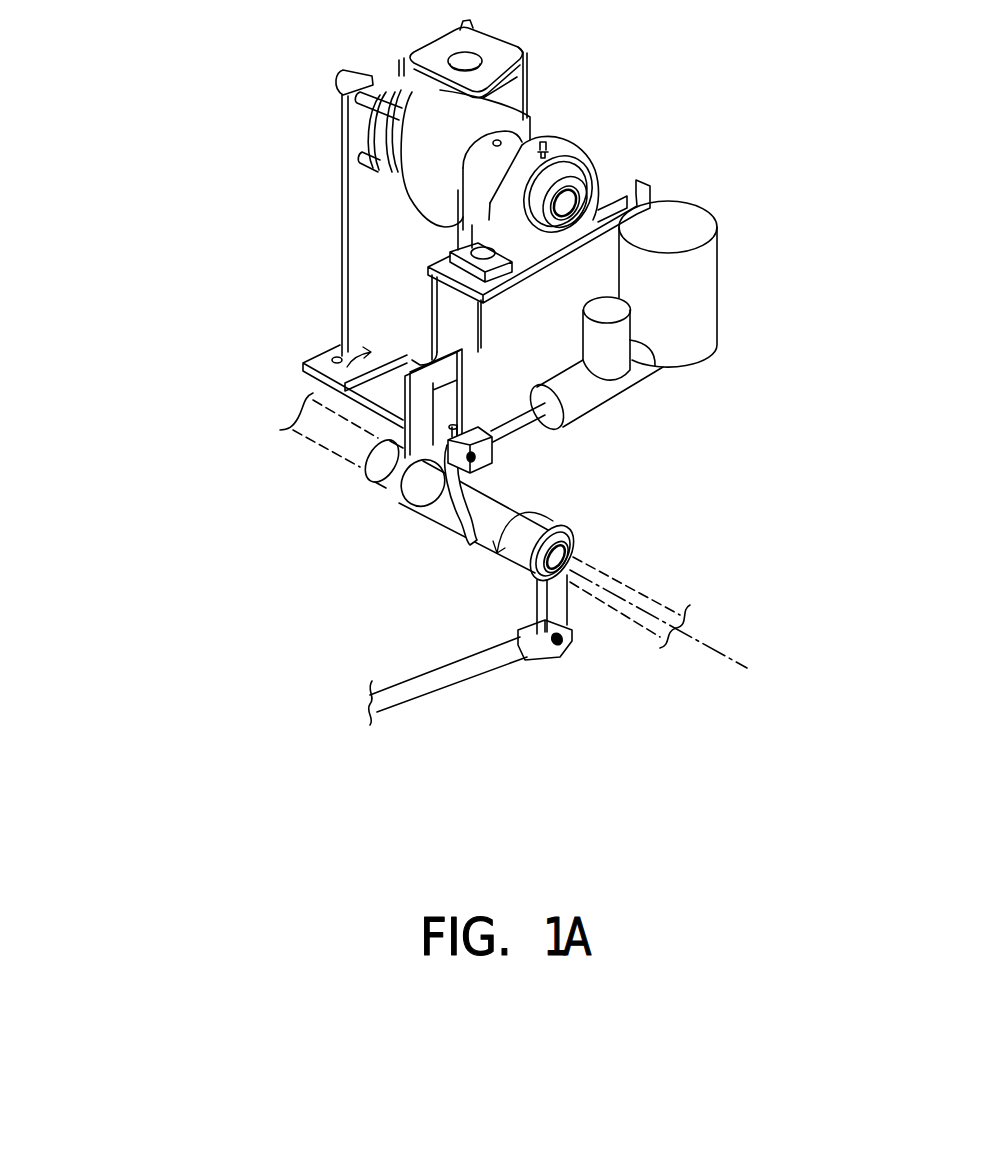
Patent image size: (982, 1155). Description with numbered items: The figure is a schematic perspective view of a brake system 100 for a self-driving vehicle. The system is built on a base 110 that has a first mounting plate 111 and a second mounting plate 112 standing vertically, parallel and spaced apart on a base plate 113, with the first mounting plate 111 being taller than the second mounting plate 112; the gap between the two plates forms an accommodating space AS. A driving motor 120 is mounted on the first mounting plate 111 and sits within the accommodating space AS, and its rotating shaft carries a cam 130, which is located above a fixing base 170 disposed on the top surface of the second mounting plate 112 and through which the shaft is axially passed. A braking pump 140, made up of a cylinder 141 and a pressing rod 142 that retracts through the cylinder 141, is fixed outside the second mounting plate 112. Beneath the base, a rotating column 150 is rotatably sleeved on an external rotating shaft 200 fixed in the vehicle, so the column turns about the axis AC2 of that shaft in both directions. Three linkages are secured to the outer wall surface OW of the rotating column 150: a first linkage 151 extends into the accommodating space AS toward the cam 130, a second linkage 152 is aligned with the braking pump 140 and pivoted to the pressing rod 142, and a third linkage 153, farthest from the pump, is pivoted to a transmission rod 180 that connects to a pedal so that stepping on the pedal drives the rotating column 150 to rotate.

The brake system 100 is at (851, 831).
The base 110 is at (131, 174).
The first mounting plate 111 is at (357, 280).
The second mounting plate 112 is at (447, 325).
The base plate 113 is at (322, 362).
The driving motor 120 is at (518, 95).
The cam 130 is at (458, 128).
The braking pump 140 is at (716, 335).
The cylinder 141 is at (603, 382).
The pressing rod 142 is at (522, 423).
The rotating column 150 is at (427, 490).
The first linkage 151 is at (408, 487).
The second linkage 152 is at (473, 490).
The third linkage 153 is at (550, 600).
The fixing base 170 is at (622, 207).
The transmission rod 180 is at (443, 677).
The rotating shaft 200 is at (627, 580).
The axis AC2 is at (703, 647).
The accommodating space AS is at (330, 376).
The outer wall surface OW is at (524, 511).